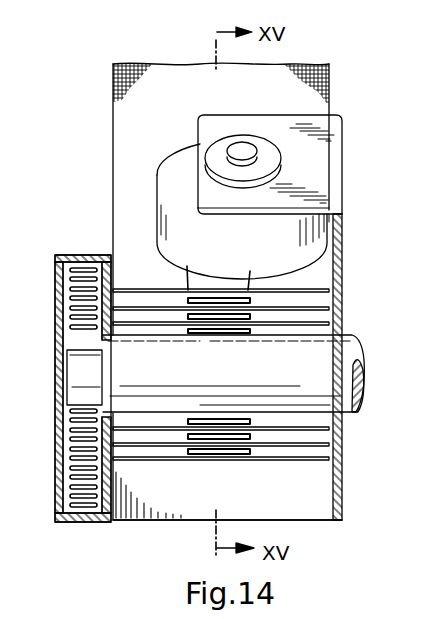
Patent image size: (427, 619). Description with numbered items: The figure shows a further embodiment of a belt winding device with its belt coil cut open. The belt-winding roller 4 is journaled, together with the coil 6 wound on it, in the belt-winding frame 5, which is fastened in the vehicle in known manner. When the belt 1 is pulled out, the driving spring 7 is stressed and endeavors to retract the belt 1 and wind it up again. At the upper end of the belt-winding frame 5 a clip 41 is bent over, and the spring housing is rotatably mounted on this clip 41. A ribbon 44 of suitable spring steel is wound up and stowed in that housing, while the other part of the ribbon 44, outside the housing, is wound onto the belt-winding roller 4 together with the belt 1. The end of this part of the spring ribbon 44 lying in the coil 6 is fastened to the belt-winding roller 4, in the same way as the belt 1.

The belt 1 is at (130, 127).
The belt-winding roller 4 is at (90, 371).
The belt-winding frame 5 is at (343, 303).
The coil 6 is at (183, 462).
The driving spring 7 is at (82, 505).
The clip 41 is at (330, 162).
The ribbon 44 is at (187, 276).